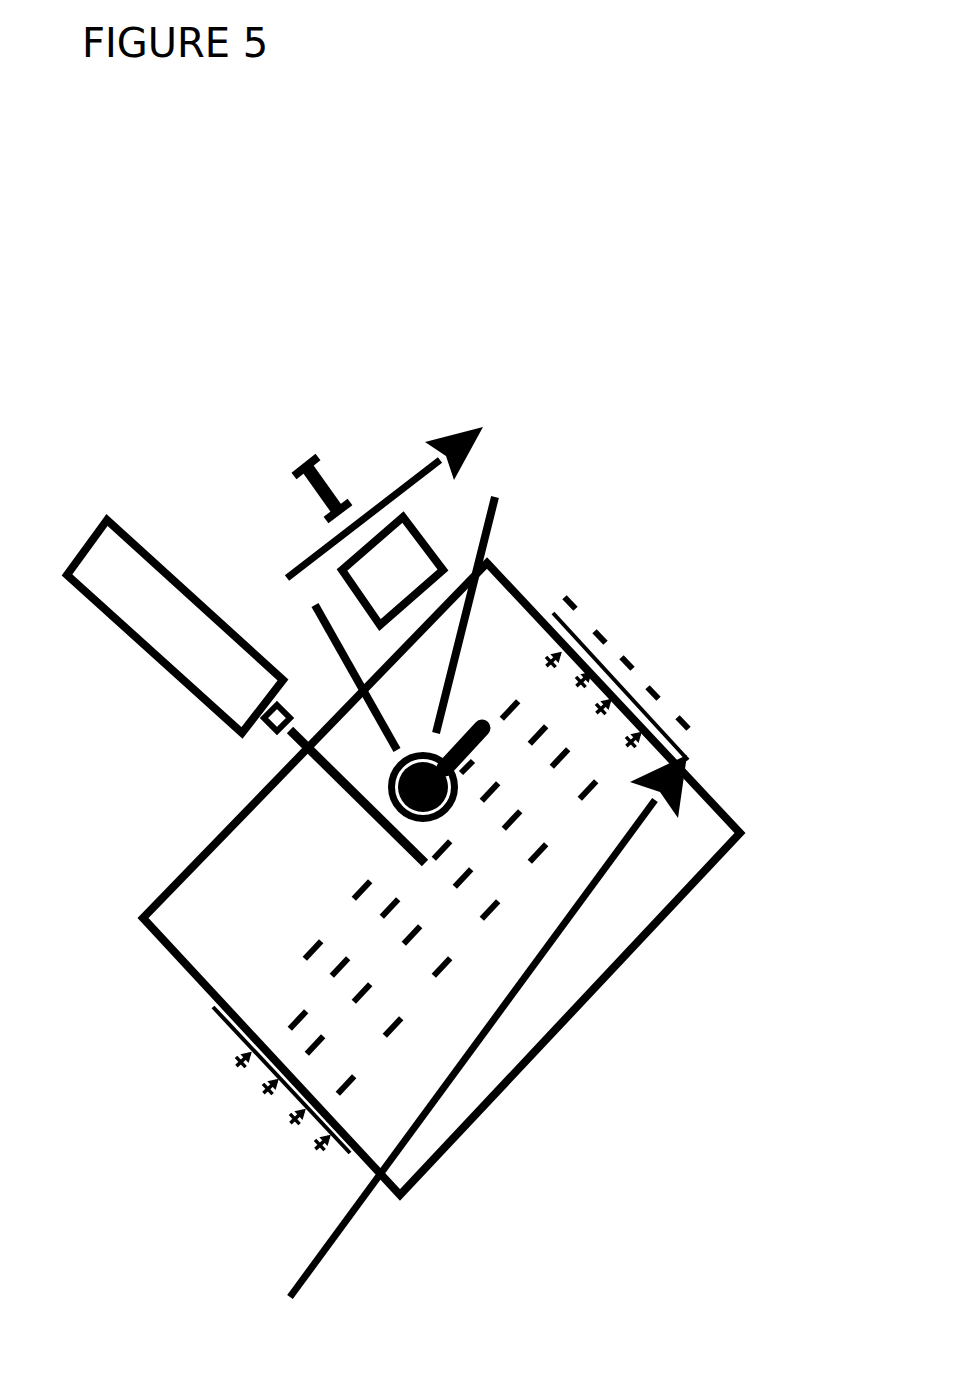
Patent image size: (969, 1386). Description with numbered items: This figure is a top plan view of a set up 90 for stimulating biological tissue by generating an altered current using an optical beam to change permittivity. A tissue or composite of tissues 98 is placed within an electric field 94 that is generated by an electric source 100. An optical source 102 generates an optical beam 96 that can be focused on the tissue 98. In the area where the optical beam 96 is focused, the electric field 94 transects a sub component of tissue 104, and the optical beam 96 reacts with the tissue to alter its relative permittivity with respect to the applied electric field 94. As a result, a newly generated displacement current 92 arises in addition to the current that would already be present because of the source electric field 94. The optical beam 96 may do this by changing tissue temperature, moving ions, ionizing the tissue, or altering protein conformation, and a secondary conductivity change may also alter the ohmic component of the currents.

The set up 90 is at (615, 297).
The displacement current 92 is at (368, 478).
The electric field 94 is at (250, 985).
The optical beam 96 is at (377, 818).
The tissue 98 is at (598, 990).
The electric source 100 is at (277, 1160).
The optical source 102 is at (147, 653).
The sub component of tissue 104 is at (420, 532).